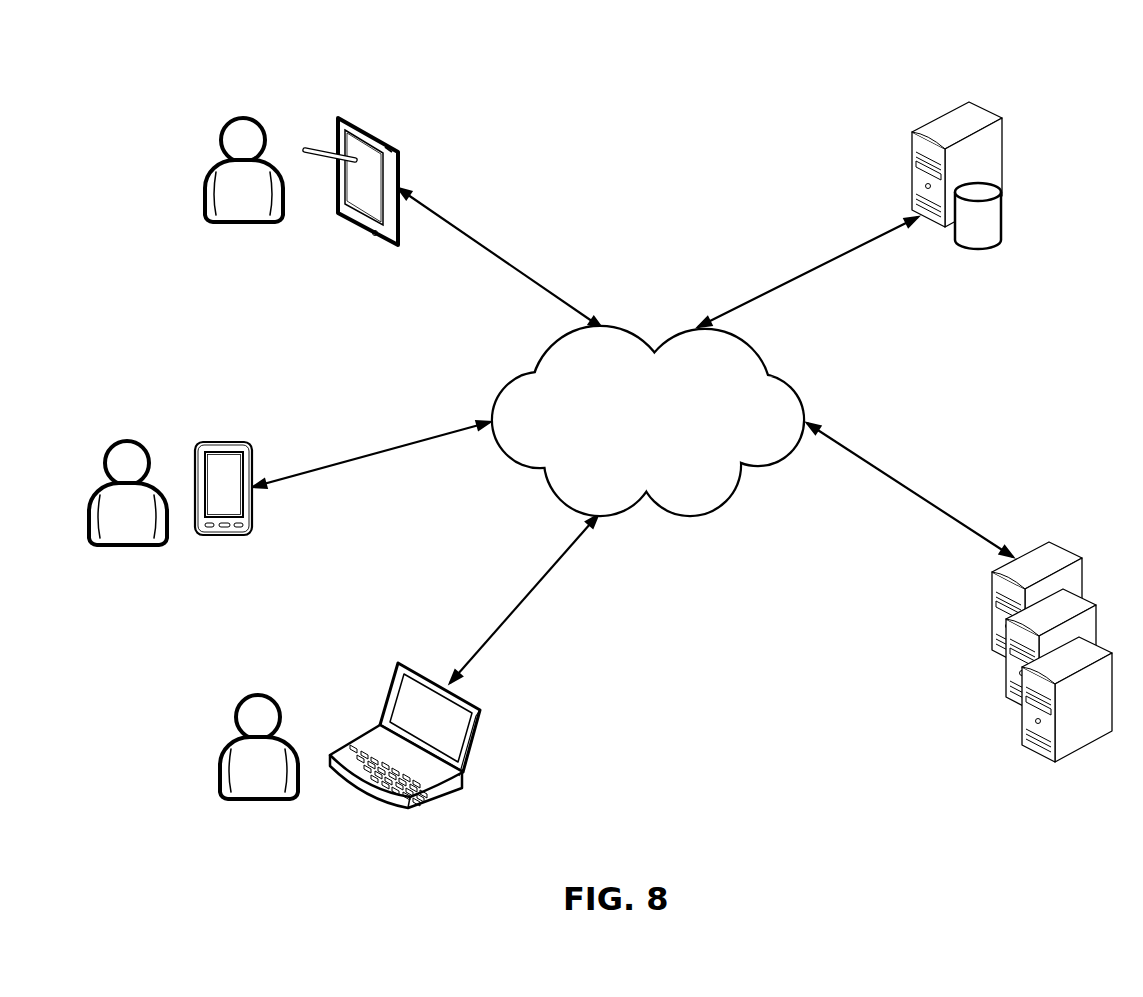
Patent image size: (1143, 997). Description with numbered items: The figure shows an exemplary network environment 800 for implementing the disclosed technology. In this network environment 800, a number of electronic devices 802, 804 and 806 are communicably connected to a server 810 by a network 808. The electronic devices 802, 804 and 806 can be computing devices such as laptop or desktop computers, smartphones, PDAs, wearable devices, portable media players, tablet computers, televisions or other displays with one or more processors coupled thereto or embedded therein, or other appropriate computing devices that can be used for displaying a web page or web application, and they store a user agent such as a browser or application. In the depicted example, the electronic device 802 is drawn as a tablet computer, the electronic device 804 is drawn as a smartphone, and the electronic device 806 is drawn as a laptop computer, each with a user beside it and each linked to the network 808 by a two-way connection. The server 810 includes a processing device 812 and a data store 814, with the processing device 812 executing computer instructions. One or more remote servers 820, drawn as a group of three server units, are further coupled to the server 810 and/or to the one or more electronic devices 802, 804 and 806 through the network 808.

The network environment 800 is at (80, 98).
The electronic device 802 is at (388, 137).
The electronic device 804 is at (225, 440).
The electronic device 806 is at (470, 755).
The network 808 is at (648, 421).
The server 810 is at (930, 257).
The processing device 812 is at (950, 110).
The data store 814 is at (990, 233).
The remote servers 820 is at (978, 687).